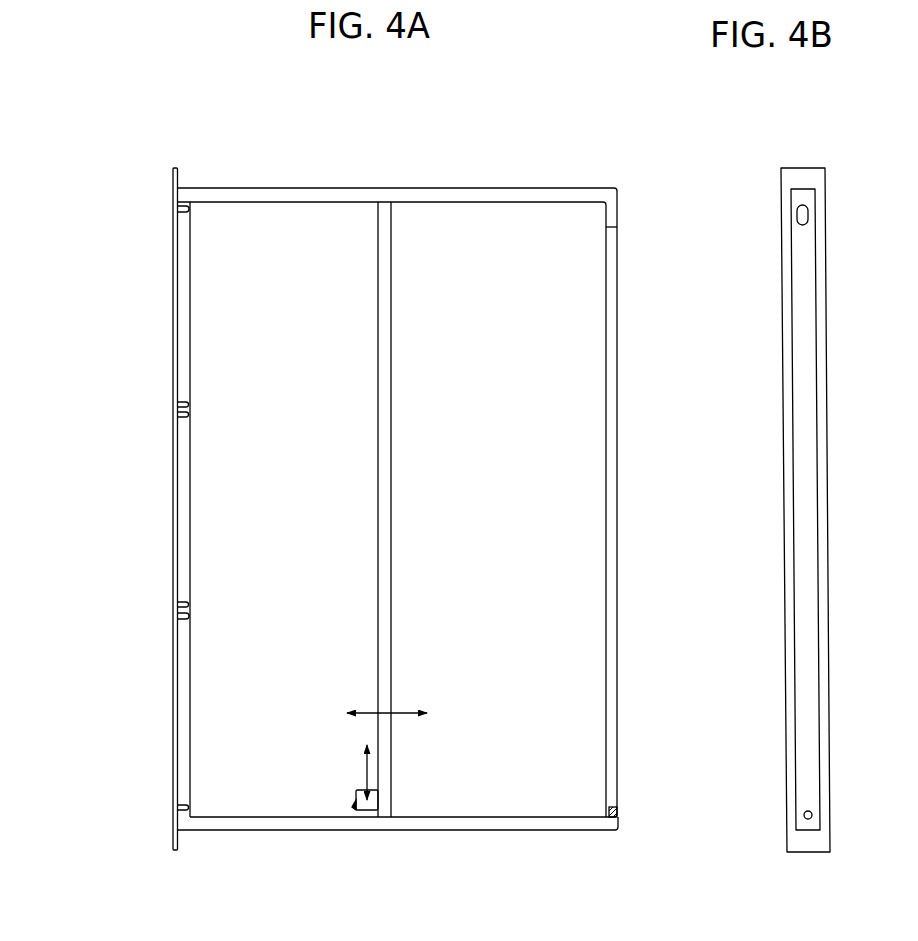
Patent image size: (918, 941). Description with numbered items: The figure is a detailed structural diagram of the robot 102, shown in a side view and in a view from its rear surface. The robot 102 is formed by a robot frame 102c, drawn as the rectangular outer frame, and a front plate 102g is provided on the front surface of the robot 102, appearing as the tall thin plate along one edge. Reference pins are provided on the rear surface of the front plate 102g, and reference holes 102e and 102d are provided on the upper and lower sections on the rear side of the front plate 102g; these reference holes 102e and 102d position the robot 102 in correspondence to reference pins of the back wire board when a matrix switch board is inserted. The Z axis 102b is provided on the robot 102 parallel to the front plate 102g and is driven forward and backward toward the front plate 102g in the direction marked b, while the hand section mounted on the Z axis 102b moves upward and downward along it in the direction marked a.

In FIG. 4A, the robot 102 is at (422, 525).
In FIG. 4A, the Z axis 102b is at (392, 510).
In FIG. 4A, the robot frame 102c is at (558, 833).
In FIG. 4A, the reference hole 102d is at (624, 819).
In FIG. 4B, the reference hole 102d is at (803, 820).
In FIG. 4A, the reference hole 102e is at (620, 212).
In FIG. 4B, the reference hole 102e is at (795, 202).
In FIG. 4A, the front plate 102g is at (113, 504).
In FIG. 4B, the front plate 102g is at (805, 510).